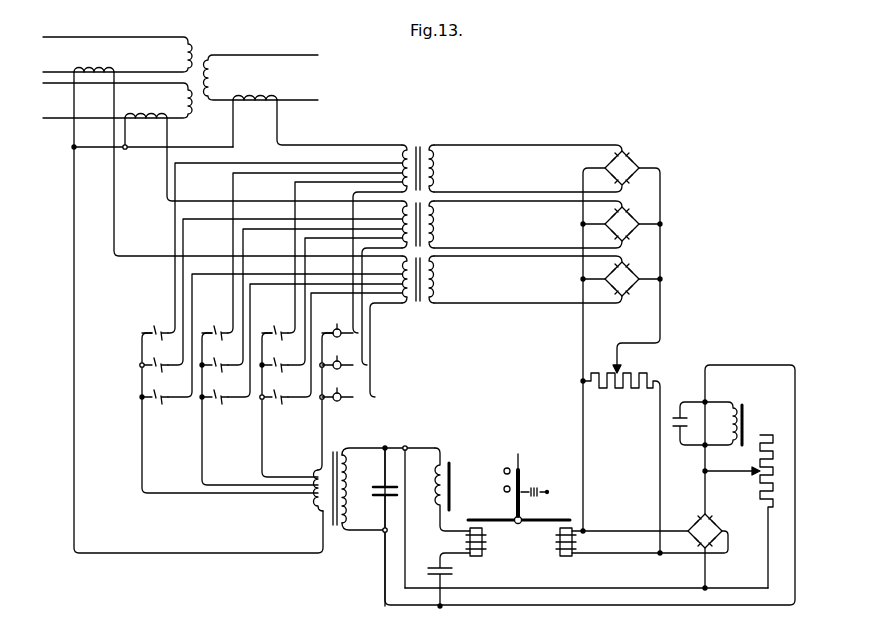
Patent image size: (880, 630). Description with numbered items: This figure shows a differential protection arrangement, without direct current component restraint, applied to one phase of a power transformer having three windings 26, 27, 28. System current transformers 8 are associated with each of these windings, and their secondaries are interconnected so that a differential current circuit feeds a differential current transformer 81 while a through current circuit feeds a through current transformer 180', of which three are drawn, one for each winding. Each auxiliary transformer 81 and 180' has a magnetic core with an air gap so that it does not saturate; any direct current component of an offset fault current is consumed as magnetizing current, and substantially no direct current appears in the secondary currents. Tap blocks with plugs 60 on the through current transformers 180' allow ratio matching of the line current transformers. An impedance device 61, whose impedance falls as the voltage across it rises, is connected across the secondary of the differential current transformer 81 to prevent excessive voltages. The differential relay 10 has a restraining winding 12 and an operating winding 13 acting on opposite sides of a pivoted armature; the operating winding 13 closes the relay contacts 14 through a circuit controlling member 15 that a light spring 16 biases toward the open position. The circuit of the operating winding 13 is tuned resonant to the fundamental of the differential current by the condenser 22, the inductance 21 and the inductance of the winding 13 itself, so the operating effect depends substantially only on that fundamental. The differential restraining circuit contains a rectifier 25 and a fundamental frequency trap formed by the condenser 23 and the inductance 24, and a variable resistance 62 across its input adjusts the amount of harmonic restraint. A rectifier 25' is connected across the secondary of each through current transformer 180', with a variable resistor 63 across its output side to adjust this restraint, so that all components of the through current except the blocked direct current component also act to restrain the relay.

The system current transformers 8 is at (94, 69).
The winding 28 is at (183, 55).
The winding 27 is at (183, 100).
The winding 26 is at (214, 83).
The through current transformer 180' is at (442, 232).
The rectifier 25' is at (633, 214).
The plugs 60 is at (339, 327).
The variable resistor 63 is at (612, 386).
The inductance 24 is at (728, 424).
The condenser 23 is at (680, 434).
The variable resistance 62 is at (777, 476).
The rectifier 25 is at (719, 531).
The restraining winding 12 is at (576, 543).
The operating winding 13 is at (466, 543).
The differential relay 10 is at (528, 557).
The circuit controlling member 15 is at (521, 476).
The relay contacts 14 is at (504, 487).
The light spring 16 is at (533, 489).
The inductance 21 is at (436, 491).
The condenser 22 is at (450, 572).
The differential current transformer 81 is at (333, 532).
The impedance device 61 is at (376, 490).